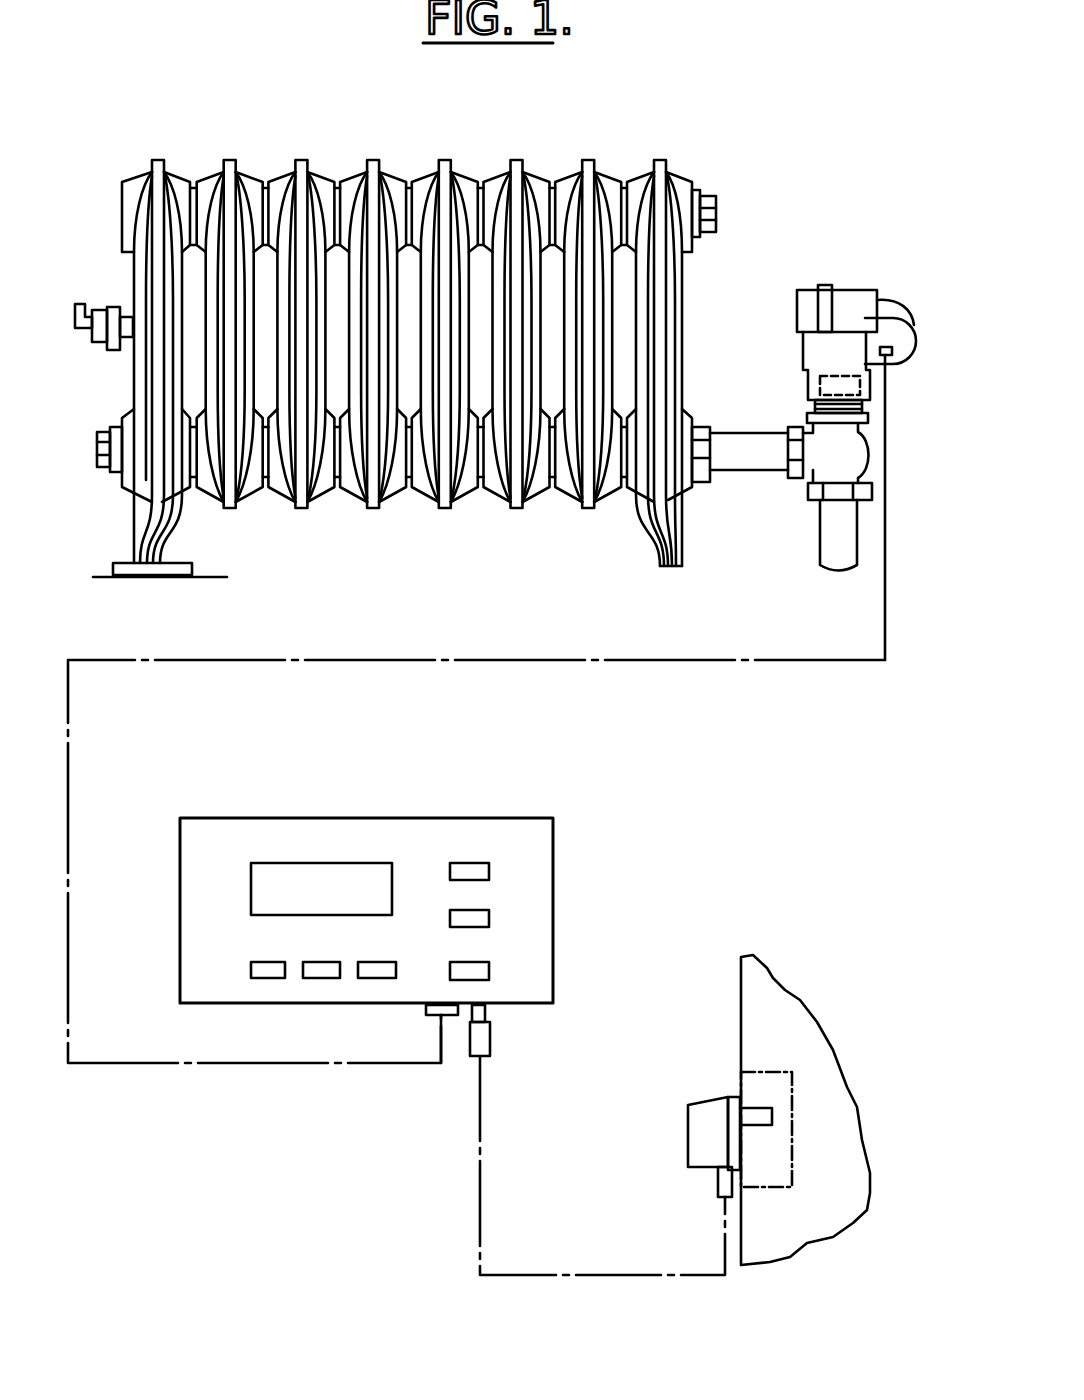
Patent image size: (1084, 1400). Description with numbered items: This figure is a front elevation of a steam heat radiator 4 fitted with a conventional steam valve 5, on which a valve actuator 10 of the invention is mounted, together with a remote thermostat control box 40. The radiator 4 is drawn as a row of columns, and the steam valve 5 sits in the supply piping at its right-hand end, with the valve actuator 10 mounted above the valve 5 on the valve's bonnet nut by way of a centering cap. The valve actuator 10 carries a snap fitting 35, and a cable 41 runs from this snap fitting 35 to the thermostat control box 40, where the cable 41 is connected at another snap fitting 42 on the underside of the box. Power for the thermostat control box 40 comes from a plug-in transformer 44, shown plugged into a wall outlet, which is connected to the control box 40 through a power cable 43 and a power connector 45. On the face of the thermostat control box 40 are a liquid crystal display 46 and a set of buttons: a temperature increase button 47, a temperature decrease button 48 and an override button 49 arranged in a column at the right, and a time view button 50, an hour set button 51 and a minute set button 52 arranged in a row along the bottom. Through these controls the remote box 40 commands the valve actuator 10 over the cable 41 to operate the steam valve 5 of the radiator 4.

The steam heat radiator 4 is at (621, 146).
The steam valve 5 is at (877, 455).
The valve actuator 10 is at (829, 268).
The snap fitting 35 is at (897, 352).
The thermostat control box 40 is at (414, 943).
The cable 41 is at (775, 662).
The snap fitting 42 is at (452, 1015).
The power cable 43 is at (540, 1268).
The plug-in transformer 44 is at (707, 1100).
The power connector 45 is at (490, 1042).
The liquid crystal display 46 is at (306, 863).
The temperature increase button 47 is at (473, 863).
The temperature decrease button 48 is at (489, 919).
The override button 49 is at (489, 971).
The time view button 50 is at (260, 978).
The hour set button 51 is at (317, 978).
The minute set button 52 is at (378, 978).